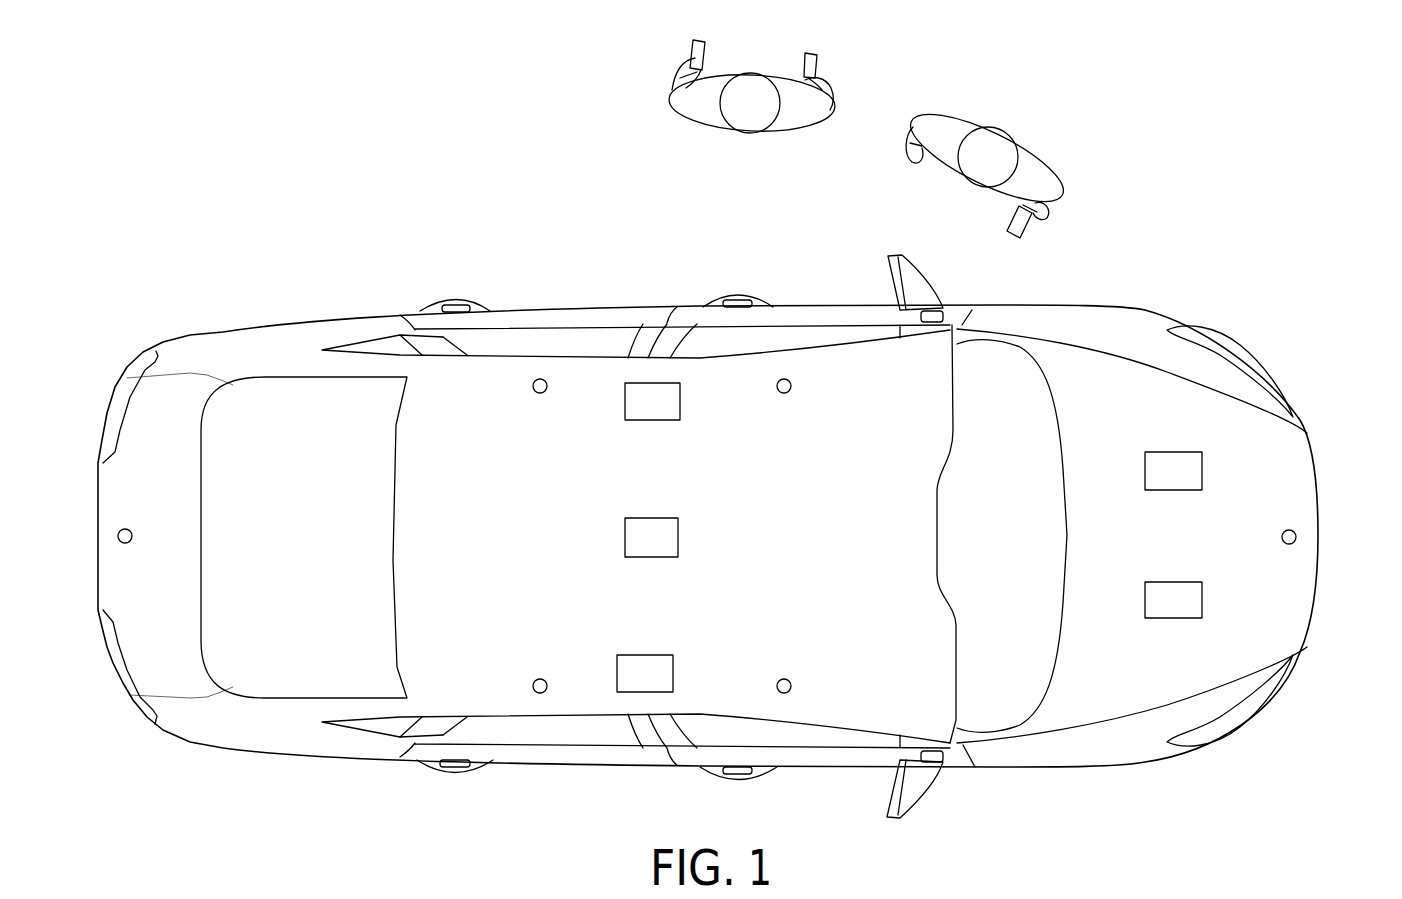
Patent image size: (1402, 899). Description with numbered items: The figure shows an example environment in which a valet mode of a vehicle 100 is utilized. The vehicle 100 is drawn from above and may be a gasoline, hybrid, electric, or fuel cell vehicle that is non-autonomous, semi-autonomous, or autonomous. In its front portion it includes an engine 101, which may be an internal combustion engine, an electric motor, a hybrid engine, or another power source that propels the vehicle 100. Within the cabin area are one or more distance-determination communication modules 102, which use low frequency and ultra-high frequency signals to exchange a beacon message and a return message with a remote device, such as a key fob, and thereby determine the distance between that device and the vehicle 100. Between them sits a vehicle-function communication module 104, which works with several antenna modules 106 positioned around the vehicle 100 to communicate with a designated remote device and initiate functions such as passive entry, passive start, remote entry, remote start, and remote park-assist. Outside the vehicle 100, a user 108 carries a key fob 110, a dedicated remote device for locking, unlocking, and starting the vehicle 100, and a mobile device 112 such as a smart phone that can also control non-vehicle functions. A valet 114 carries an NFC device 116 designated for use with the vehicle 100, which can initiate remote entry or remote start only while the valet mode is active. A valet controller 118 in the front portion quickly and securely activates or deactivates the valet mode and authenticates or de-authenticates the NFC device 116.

The vehicle 100 is at (1313, 460).
The engine 101 is at (1192, 485).
The distance-determination communication modules 102 is at (671, 415).
The vehicle-function communication module 104 is at (670, 551).
The antenna modules 106 is at (540, 393).
The user 108 is at (697, 118).
The key fob 110 is at (818, 64).
The mobile device 112 is at (693, 53).
The valet 114 is at (1032, 153).
The NFC device 116 is at (1026, 234).
The valet controller 118 is at (1192, 613).